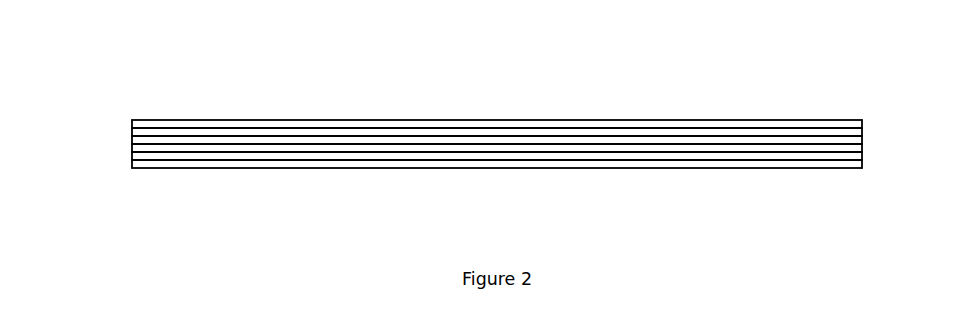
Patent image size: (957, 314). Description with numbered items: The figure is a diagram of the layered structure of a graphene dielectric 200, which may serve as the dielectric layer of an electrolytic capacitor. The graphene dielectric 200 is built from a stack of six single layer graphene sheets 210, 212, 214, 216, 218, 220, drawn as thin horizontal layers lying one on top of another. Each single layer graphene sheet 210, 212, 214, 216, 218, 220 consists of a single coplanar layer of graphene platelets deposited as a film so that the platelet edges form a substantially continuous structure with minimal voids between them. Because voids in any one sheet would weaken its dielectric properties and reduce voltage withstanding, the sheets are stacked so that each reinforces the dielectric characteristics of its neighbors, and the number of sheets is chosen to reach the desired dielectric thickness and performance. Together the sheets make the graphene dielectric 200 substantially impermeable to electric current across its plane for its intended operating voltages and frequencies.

The graphene dielectric 200 is at (467, 105).
The single layer graphene sheet 210 is at (132, 121).
The single layer graphene sheet 212 is at (132, 128).
The single layer graphene sheet 214 is at (132, 136).
The single layer graphene sheet 216 is at (132, 145).
The single layer graphene sheet 218 is at (132, 154).
The single layer graphene sheet 220 is at (130, 167).